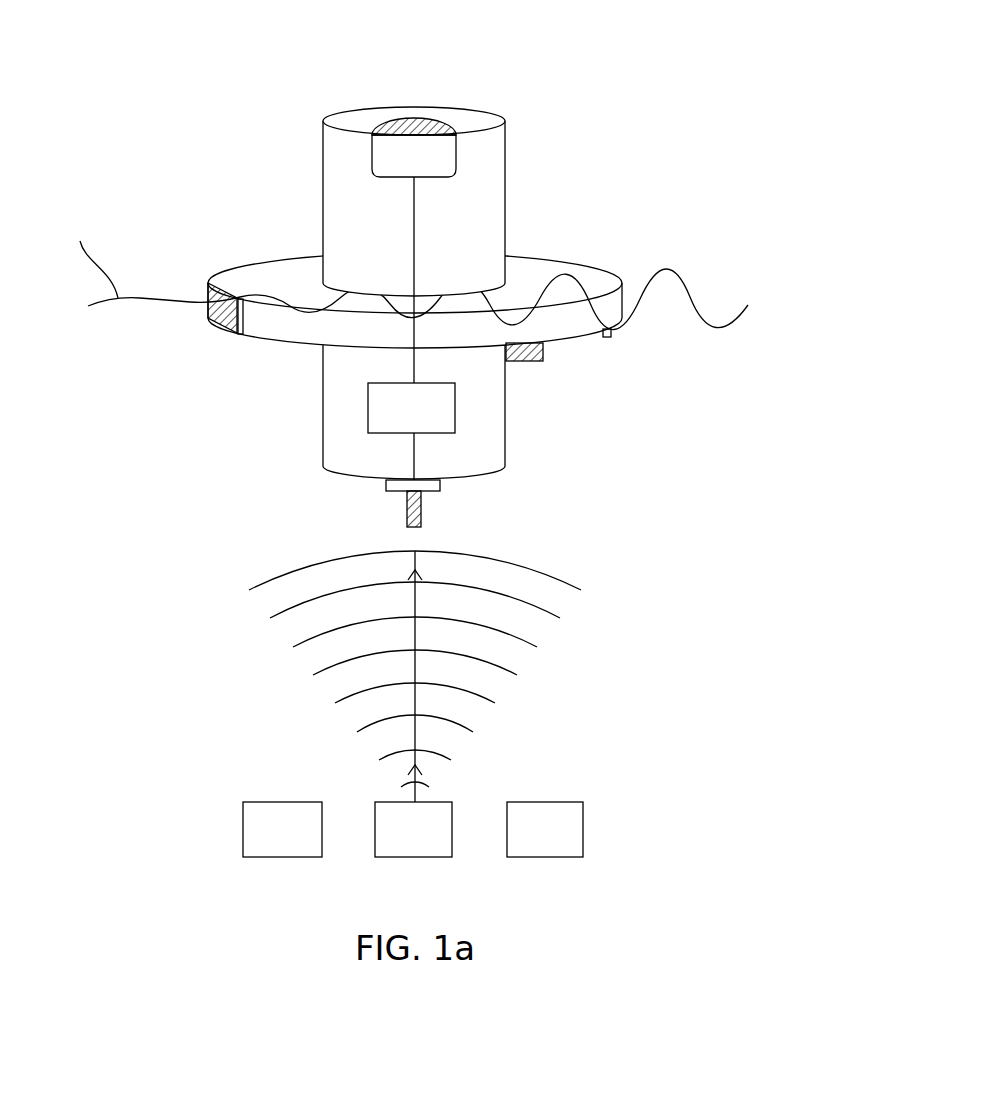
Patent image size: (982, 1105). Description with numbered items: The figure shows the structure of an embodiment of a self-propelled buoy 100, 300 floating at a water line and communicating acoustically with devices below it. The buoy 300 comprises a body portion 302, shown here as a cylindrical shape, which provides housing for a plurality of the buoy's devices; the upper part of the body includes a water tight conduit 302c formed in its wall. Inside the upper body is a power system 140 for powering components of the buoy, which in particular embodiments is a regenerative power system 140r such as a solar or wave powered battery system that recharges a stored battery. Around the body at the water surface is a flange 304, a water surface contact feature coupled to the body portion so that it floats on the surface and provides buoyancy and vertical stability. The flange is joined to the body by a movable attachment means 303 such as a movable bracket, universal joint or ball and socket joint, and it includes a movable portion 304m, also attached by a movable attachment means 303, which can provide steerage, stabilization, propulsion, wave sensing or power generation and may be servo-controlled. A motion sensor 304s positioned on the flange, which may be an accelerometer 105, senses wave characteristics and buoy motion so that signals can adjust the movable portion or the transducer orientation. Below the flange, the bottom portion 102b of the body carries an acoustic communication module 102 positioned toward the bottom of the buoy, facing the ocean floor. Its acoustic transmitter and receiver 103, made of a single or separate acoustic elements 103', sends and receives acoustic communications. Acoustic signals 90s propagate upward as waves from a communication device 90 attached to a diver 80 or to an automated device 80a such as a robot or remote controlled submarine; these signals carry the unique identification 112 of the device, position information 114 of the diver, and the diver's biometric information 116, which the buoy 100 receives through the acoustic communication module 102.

The buoy 100 is at (403, 275).
The buoy 300 is at (566, 68).
The body portion 302 is at (368, 120).
The water tight conduit 302c is at (490, 157).
The regenerative power system 140r is at (418, 117).
The power system 140 is at (423, 110).
The flange 304 is at (284, 276).
The movable portion 304m is at (206, 320).
The movable attachment means 303 is at (238, 336).
The motion sensor 304s is at (670, 357).
The accelerometer 105 is at (607, 338).
The acoustic communication module 102 is at (411, 408).
The bottom portion 102b is at (500, 478).
The acoustic transmitter and receiver 103 is at (427, 503).
The acoustic element 103' is at (494, 509).
The unique identification 112 is at (523, 676).
The position information 114 is at (523, 676).
The biometric information 116 is at (523, 676).
The signals 90s is at (426, 574).
The communication device 90 is at (413, 829).
The diver 80 is at (282, 829).
The automated device 80a is at (545, 829).